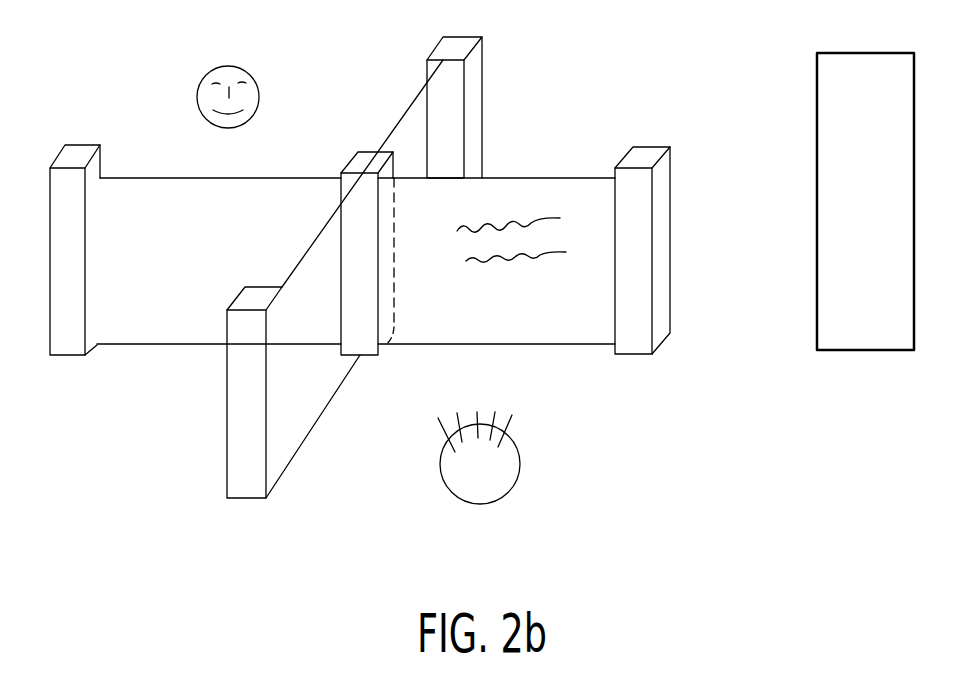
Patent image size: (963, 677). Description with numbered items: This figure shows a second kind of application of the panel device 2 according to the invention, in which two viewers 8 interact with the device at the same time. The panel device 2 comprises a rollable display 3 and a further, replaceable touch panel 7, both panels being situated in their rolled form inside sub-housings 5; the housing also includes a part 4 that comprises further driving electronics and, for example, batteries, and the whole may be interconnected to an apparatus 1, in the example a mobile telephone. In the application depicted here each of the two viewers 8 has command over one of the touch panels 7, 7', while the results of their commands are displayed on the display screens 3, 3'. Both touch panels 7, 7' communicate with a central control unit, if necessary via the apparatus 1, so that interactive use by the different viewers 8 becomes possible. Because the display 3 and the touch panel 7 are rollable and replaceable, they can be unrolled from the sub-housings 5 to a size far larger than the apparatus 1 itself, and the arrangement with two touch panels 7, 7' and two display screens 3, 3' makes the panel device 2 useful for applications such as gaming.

The apparatus 1 is at (843, 338).
The panel device 2 is at (162, 508).
The rollable display 3 is at (356, 308).
The display screen 3' is at (357, 159).
The housing part 4 is at (378, 352).
The sub-housing 5 is at (60, 162).
The touch panel 7 is at (321, 426).
The touch panel 7' is at (404, 173).
The viewer 8 is at (197, 98).